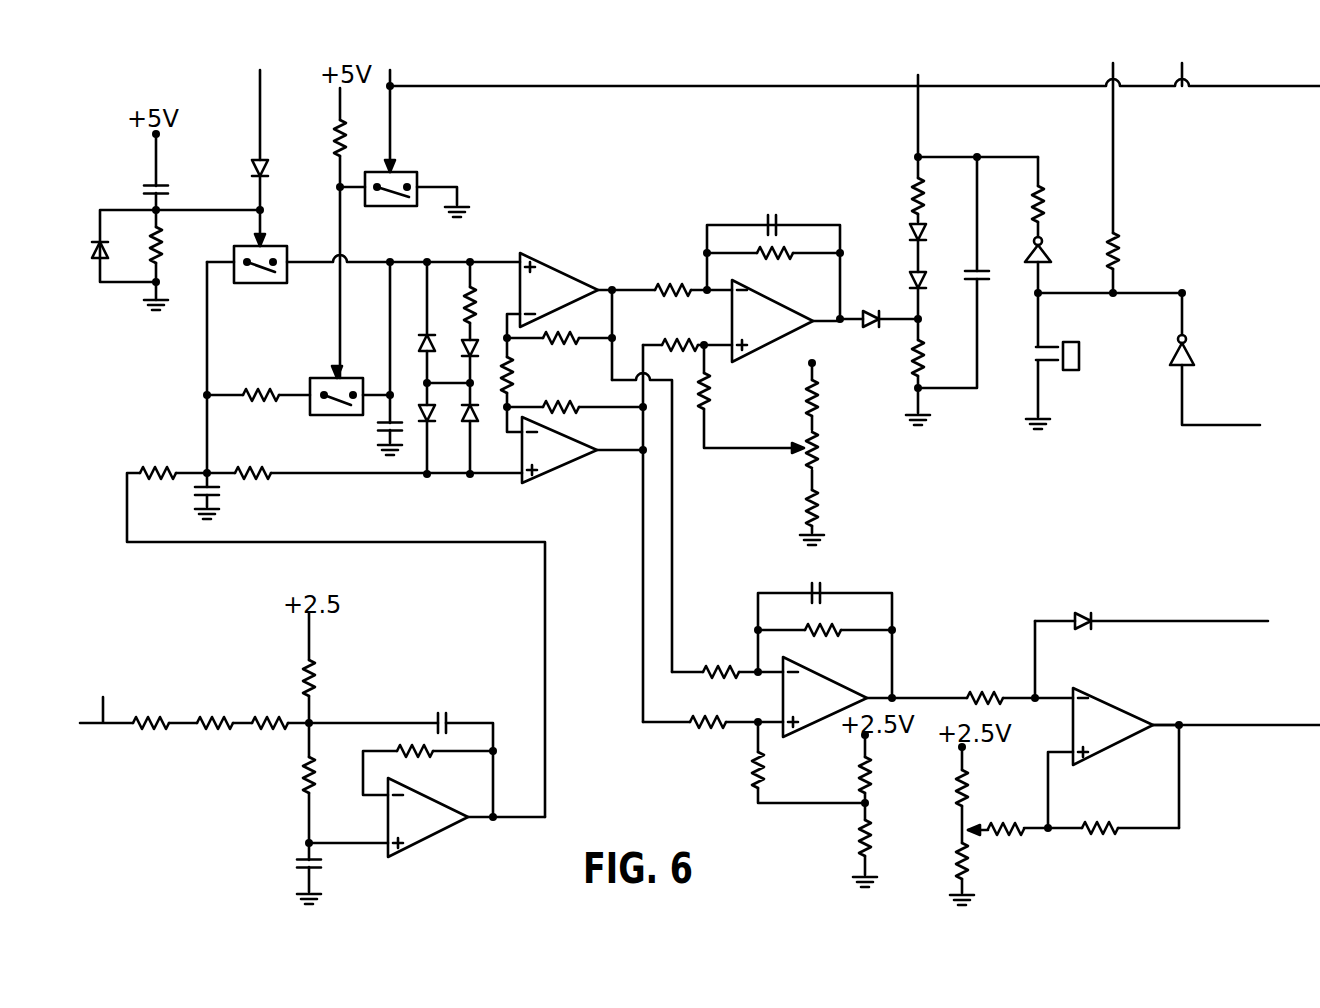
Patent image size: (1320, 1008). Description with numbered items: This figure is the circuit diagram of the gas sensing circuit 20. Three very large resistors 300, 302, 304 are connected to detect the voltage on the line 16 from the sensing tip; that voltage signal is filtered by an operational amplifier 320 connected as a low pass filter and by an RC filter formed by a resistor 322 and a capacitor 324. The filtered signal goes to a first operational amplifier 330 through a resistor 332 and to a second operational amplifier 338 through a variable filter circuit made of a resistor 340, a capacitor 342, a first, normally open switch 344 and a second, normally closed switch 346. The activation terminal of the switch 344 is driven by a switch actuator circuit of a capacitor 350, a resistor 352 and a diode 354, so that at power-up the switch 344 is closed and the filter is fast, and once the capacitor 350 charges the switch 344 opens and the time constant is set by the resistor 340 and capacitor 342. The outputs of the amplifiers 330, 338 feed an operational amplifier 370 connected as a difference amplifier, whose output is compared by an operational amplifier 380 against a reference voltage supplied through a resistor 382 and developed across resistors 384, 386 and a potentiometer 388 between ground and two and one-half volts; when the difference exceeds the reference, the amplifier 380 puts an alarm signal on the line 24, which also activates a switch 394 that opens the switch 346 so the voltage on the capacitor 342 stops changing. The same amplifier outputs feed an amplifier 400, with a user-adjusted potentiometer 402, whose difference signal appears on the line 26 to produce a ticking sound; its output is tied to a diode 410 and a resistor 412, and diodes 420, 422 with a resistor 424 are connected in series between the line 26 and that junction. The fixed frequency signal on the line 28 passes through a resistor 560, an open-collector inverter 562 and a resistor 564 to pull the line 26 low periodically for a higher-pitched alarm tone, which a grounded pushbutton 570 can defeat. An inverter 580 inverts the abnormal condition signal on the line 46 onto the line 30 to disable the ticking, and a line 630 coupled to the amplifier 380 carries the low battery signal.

The gas sensing circuit 20 is at (218, 128).
The line 46 is at (263, 113).
The line 24 is at (392, 73).
The line 26 is at (920, 75).
The line 28 is at (1113, 73).
The line 30 is at (1182, 75).
The capacitor 350 is at (165, 186).
The resistor 352 is at (160, 236).
The diode 354 is at (98, 262).
The first, normally open switch 344 is at (260, 285).
The second, normally closed switch 346 is at (318, 378).
The resistor 340 is at (255, 412).
The capacitor 342 is at (378, 432).
The resistor 322 is at (166, 468).
The capacitor 324 is at (216, 496).
The resistor 332 is at (262, 480).
The switch 394 is at (372, 207).
The second operational amplifier 338 is at (567, 270).
The first operational amplifier 330 is at (562, 467).
The amplifier 400 is at (762, 348).
The potentiometer 402 is at (818, 458).
The diode 410 is at (865, 333).
The resistor 412 is at (920, 352).
The diode 420 is at (910, 235).
The diode 422 is at (910, 283).
The resistor 424 is at (910, 192).
The resistor 564 is at (1042, 193).
The open-collector inverter 562 is at (1043, 240).
The resistor 560 is at (1145, 229).
The pushbutton 570 is at (1071, 371).
The inverter 580 is at (1192, 353).
The line 16 is at (106, 697).
The resistor 300 is at (145, 737).
The resistor 302 is at (215, 737).
The resistor 304 is at (273, 737).
The operational amplifier 320 is at (423, 845).
The operational amplifier 370 is at (821, 716).
The operational amplifier 380 is at (1093, 757).
The resistor 382 is at (1013, 838).
The resistor 384 is at (968, 786).
The resistor 386 is at (972, 872).
The potentiometer 388 is at (968, 822).
The line 630 is at (1143, 623).